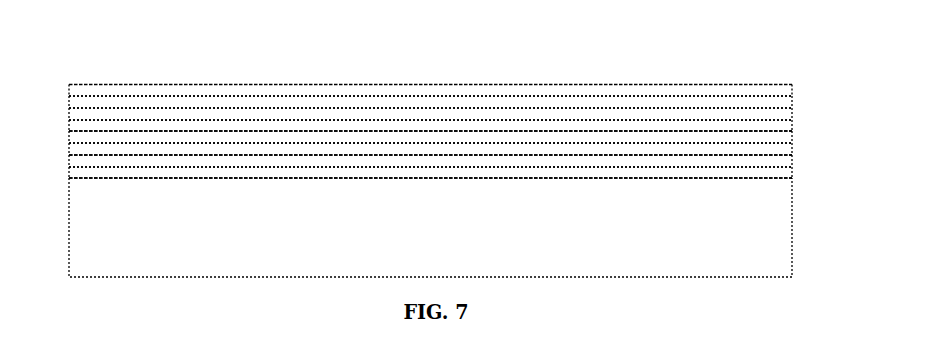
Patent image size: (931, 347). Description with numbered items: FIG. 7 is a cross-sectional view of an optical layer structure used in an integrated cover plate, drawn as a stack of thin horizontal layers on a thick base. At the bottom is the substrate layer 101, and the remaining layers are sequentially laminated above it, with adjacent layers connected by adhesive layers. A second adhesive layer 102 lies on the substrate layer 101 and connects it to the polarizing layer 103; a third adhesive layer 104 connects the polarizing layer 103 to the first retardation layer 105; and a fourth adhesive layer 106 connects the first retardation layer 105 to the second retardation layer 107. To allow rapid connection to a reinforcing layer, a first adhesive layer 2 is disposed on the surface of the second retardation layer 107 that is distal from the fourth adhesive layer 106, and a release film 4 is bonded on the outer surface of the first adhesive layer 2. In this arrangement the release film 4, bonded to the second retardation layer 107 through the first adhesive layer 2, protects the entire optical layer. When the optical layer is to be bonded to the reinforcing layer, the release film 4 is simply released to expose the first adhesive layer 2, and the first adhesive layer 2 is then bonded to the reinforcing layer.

The first adhesive layer 2 is at (127, 102).
The release film 4 is at (272, 92).
The substrate layer 101 is at (792, 228).
The second adhesive layer 102 is at (792, 176).
The polarizing layer 103 is at (792, 162).
The third adhesive layer 104 is at (69, 150).
The first retardation layer 105 is at (69, 137).
The fourth adhesive layer 106 is at (792, 125).
The second retardation layer 107 is at (792, 107).